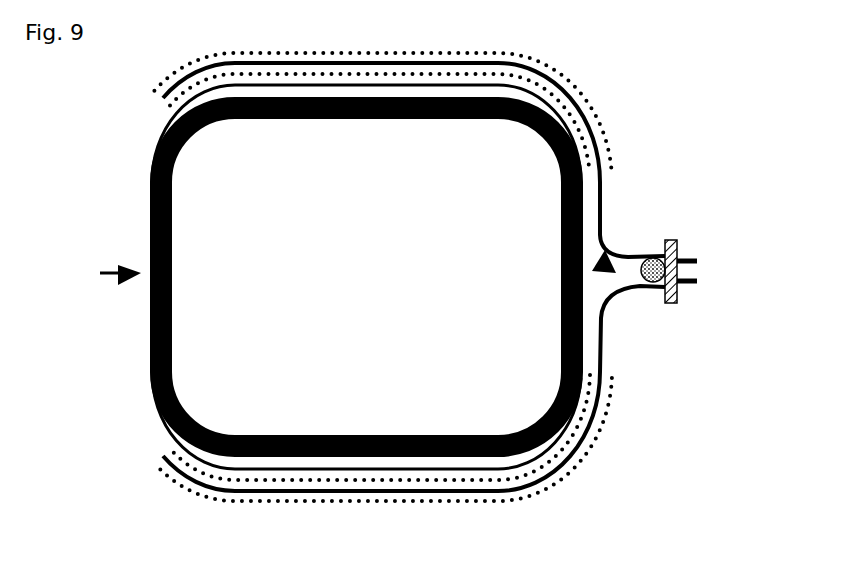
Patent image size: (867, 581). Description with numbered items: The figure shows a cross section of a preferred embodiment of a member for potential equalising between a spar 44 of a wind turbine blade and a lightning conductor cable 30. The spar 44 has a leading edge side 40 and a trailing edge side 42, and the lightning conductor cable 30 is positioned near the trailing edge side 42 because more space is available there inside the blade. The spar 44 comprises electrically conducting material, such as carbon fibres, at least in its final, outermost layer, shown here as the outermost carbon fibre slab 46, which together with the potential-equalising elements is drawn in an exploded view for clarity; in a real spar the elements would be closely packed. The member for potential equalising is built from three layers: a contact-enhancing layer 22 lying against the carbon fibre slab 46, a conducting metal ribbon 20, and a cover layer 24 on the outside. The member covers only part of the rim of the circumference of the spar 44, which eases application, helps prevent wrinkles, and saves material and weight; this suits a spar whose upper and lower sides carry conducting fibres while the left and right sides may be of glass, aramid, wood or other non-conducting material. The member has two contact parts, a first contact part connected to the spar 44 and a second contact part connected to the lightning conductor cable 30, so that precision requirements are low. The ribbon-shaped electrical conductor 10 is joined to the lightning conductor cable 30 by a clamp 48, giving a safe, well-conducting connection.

The electrical conductor 10 is at (602, 228).
The conducting metal ribbon 20 is at (373, 490).
The contact-enhancing layer 22 is at (207, 470).
The cover layer 24 is at (473, 502).
The lightning conductor cable 30 is at (655, 285).
The leading edge side 40 is at (94, 266).
The trailing edge side 42 is at (607, 262).
The spar 44 is at (150, 337).
The carbon fibre slab 46 is at (187, 442).
The clamp 48 is at (677, 292).